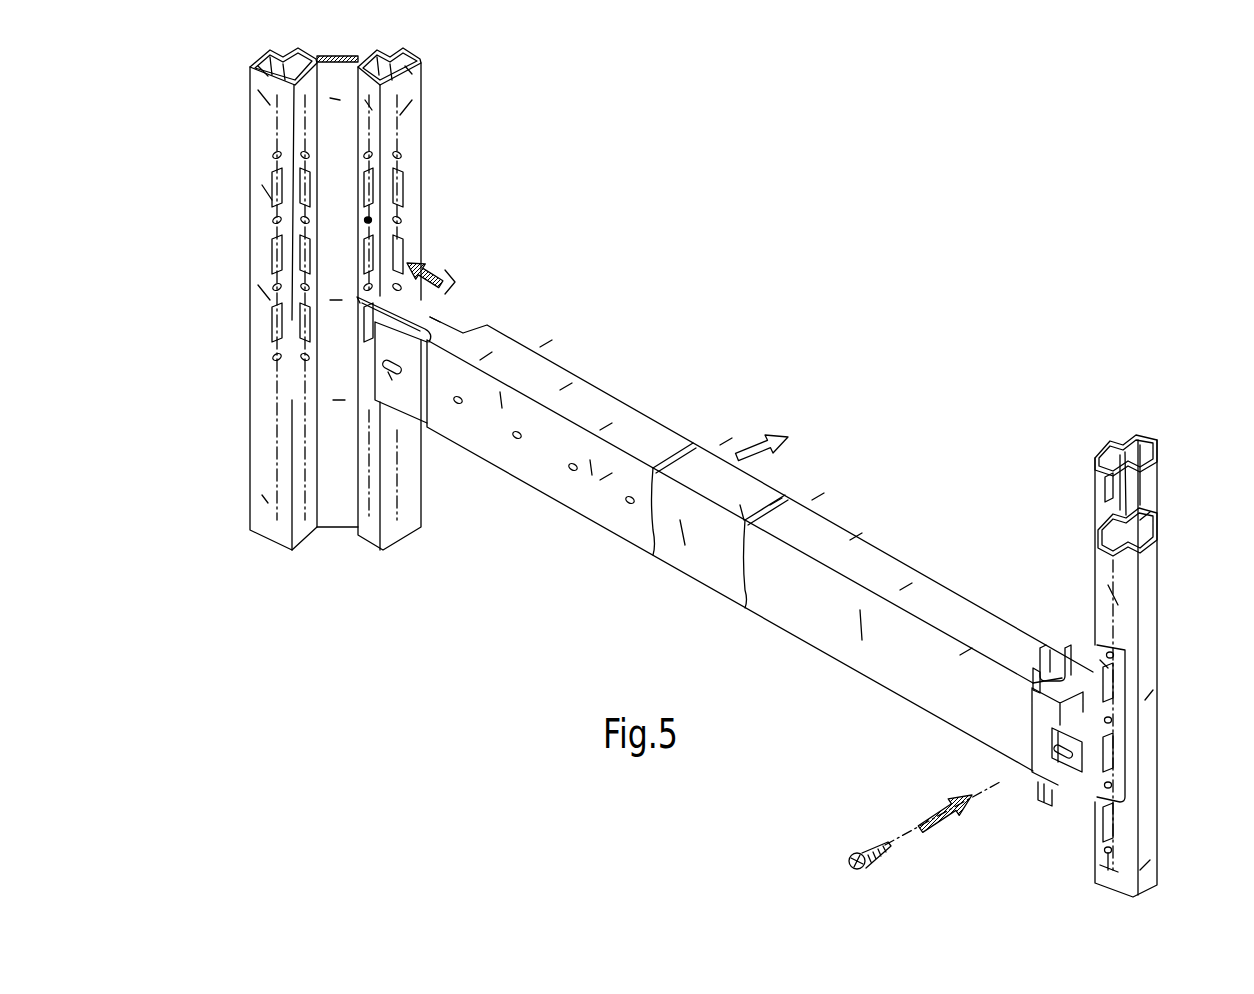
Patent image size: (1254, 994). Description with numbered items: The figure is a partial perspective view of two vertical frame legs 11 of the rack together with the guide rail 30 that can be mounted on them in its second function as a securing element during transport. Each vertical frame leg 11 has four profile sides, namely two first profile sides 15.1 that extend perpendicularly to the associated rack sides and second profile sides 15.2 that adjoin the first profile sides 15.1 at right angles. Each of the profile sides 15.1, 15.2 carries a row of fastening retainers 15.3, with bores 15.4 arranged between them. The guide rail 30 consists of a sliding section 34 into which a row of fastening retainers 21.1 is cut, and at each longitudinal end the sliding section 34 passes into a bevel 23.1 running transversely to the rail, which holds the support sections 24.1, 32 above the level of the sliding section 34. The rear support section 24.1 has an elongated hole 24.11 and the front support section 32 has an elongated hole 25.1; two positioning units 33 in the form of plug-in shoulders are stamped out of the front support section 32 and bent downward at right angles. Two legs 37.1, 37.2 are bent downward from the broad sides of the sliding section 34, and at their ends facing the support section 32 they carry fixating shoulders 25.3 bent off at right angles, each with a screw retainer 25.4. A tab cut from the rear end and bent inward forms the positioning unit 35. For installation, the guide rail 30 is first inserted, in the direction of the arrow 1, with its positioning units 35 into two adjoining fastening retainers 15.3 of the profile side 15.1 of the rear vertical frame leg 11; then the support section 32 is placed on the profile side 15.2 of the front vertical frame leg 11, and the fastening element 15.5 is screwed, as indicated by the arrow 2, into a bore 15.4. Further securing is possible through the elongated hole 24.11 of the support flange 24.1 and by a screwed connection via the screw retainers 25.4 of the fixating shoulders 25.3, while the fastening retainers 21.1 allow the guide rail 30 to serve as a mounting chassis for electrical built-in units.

The viewing direction arrow 1 is at (437, 276).
The insertion direction arrow 2 is at (942, 813).
The vertical frame leg 11 is at (474, 115).
The first profile side 15.1 is at (407, 90).
The second profile side 15.2 is at (290, 140).
The fastening retainer 15.3 is at (372, 187).
The bore 15.4 is at (370, 218).
The fastening element 15.5 is at (850, 863).
The fastening retainer 21.1 is at (517, 440).
The bevel 23.1 is at (1033, 752).
The support section 24.1 is at (420, 400).
The elongated hole 24.11 is at (397, 400).
The elongated hole 25.1 is at (1060, 762).
The fixating shoulder 25.3 is at (1037, 667).
The screw retainer 25.4 is at (1050, 648).
The guide rail 30 is at (640, 392).
The support section 32 is at (1043, 715).
The positioning unit 33 is at (1093, 798).
The sliding section 34 is at (550, 423).
The positioning unit 35 is at (447, 313).
The leg 37.1 is at (663, 440).
The leg 37.2 is at (573, 513).